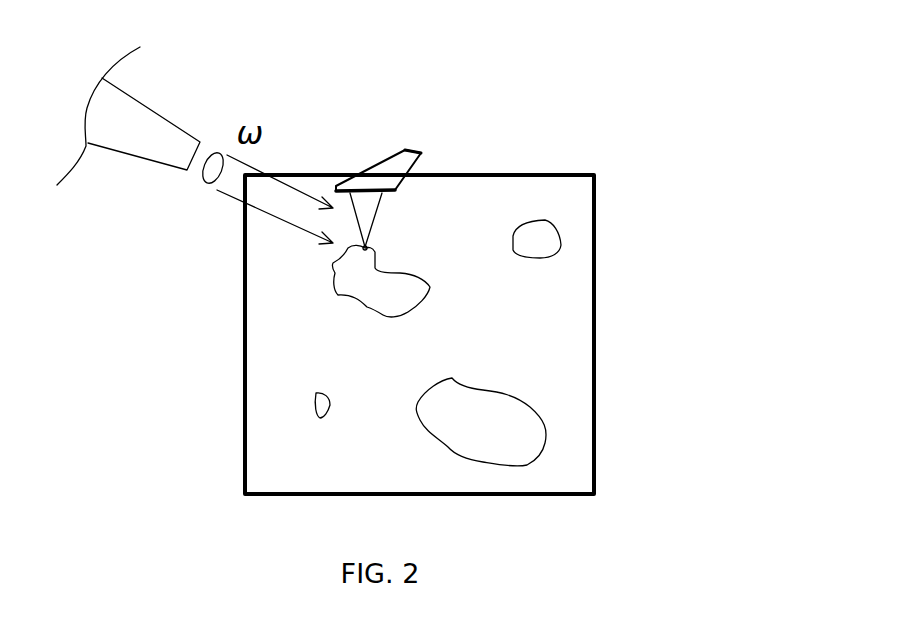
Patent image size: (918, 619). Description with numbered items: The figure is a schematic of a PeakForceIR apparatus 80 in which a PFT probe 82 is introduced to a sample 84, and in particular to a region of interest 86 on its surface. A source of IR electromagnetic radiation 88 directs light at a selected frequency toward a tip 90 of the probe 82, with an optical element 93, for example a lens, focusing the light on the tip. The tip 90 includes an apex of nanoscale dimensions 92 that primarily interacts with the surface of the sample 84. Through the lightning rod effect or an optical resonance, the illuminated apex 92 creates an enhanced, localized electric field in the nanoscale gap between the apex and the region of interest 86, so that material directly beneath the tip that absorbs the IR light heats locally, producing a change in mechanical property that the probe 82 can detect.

The PeakForceIR apparatus 80 is at (570, 138).
The PFT probe 82 is at (388, 117).
The sample 84 is at (558, 338).
The region of interest 86 is at (348, 274).
The source of IR electromagnetic radiation 88 is at (152, 120).
The tip 90 is at (365, 212).
The apex of nanoscale dimensions 92 is at (365, 250).
The optical element 93 is at (214, 166).